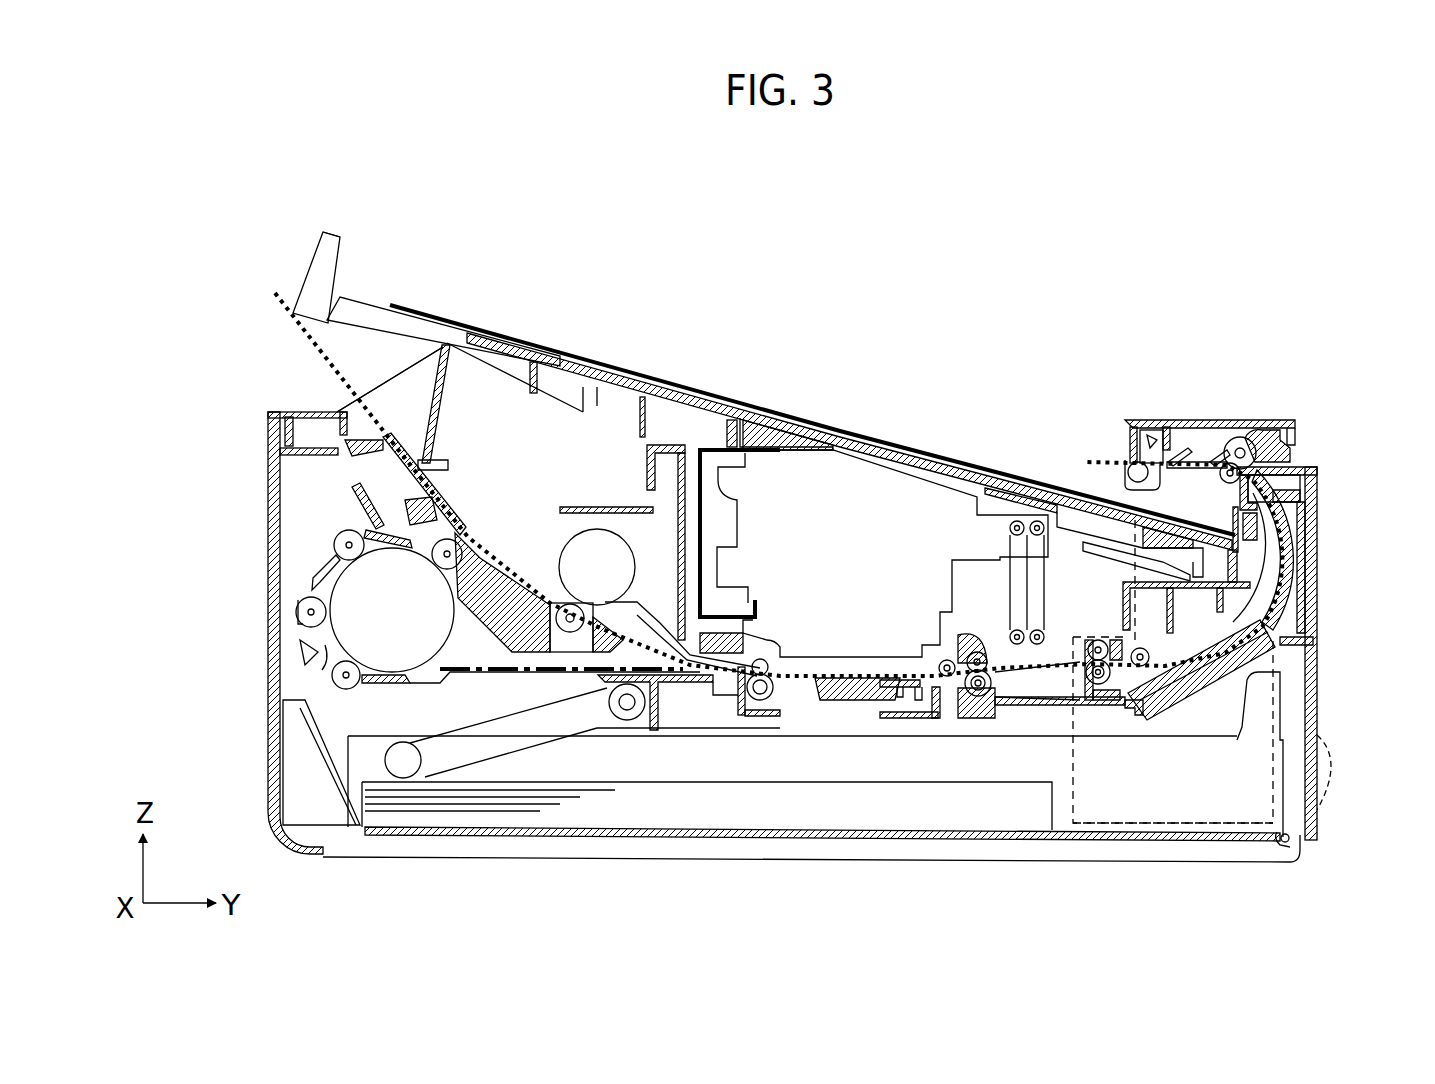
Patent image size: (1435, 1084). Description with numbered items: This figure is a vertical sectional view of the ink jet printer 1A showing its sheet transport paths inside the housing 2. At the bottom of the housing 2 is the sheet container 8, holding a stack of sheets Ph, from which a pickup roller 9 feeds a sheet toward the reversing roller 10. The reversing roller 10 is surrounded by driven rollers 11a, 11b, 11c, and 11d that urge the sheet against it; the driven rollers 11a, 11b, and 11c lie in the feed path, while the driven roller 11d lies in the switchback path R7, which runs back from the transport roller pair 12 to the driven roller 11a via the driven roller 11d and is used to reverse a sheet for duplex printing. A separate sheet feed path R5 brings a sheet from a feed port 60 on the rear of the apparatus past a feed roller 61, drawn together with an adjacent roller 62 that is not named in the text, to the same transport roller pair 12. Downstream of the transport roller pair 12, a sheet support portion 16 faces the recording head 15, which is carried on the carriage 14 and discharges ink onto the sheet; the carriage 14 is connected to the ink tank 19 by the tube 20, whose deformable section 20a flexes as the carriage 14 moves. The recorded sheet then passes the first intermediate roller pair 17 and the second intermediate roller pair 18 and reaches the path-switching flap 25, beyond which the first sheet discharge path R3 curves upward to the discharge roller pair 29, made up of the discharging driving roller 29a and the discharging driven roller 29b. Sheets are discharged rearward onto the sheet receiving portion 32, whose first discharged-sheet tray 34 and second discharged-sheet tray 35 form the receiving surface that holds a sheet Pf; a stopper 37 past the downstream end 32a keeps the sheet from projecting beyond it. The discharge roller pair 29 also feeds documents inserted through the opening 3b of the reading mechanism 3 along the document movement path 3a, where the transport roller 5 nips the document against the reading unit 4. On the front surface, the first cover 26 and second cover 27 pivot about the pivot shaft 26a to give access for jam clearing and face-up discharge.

The ink jet printer 1A is at (838, 208).
The housing 2 is at (268, 520).
The reading mechanism 3 is at (1198, 338).
The document movement path 3a is at (1203, 460).
The opening 3b is at (1310, 450).
The reading unit 4 is at (1147, 420).
The transport roller 5 is at (1087, 463).
The sheet container 8 is at (663, 830).
The pickup roller 9 is at (415, 780).
The reversing roller 10 is at (350, 638).
The driven roller 11a is at (300, 612).
The driven roller 11b is at (335, 548).
The driven roller 11c is at (460, 527).
The driven roller 11d is at (340, 683).
The transport roller pair 12 is at (762, 700).
The carriage 14 is at (863, 572).
The recording head 15 is at (827, 663).
The sheet support portion 16 is at (878, 697).
The first intermediate roller pair 17 is at (1000, 683).
The second intermediate roller pair 18 is at (1085, 690).
The ink tank 19 is at (1317, 810).
The tube 20 is at (1017, 520).
The deformable section 20a is at (1027, 582).
The path-switching flap 25 is at (1192, 697).
The first cover 26 is at (1313, 740).
The pivot shaft 26a is at (1290, 845).
The second cover 27 is at (1318, 575).
The discharge roller pair 29 is at (1250, 432).
The discharging driving roller 29a is at (1240, 450).
The discharging driven roller 29b is at (1220, 453).
The sheet receiving portion 32 is at (782, 287).
The downstream end of the sheet receiving portion 32a is at (340, 297).
The first discharged-sheet tray 34 is at (848, 405).
The second discharged-sheet tray 35 is at (683, 397).
The stopper 37 is at (345, 228).
The feed port 60 is at (400, 410).
The feed roller 61 is at (607, 540).
The agitator roller 62 is at (568, 603).
The sheet held on the sheet receiving surface Pf is at (493, 328).
The sheets accommodated in the sheet container Ph is at (580, 813).
The first sheet discharge path R3 is at (1287, 665).
The sheet feed path R5 is at (292, 320).
The switchback path R7 is at (520, 705).